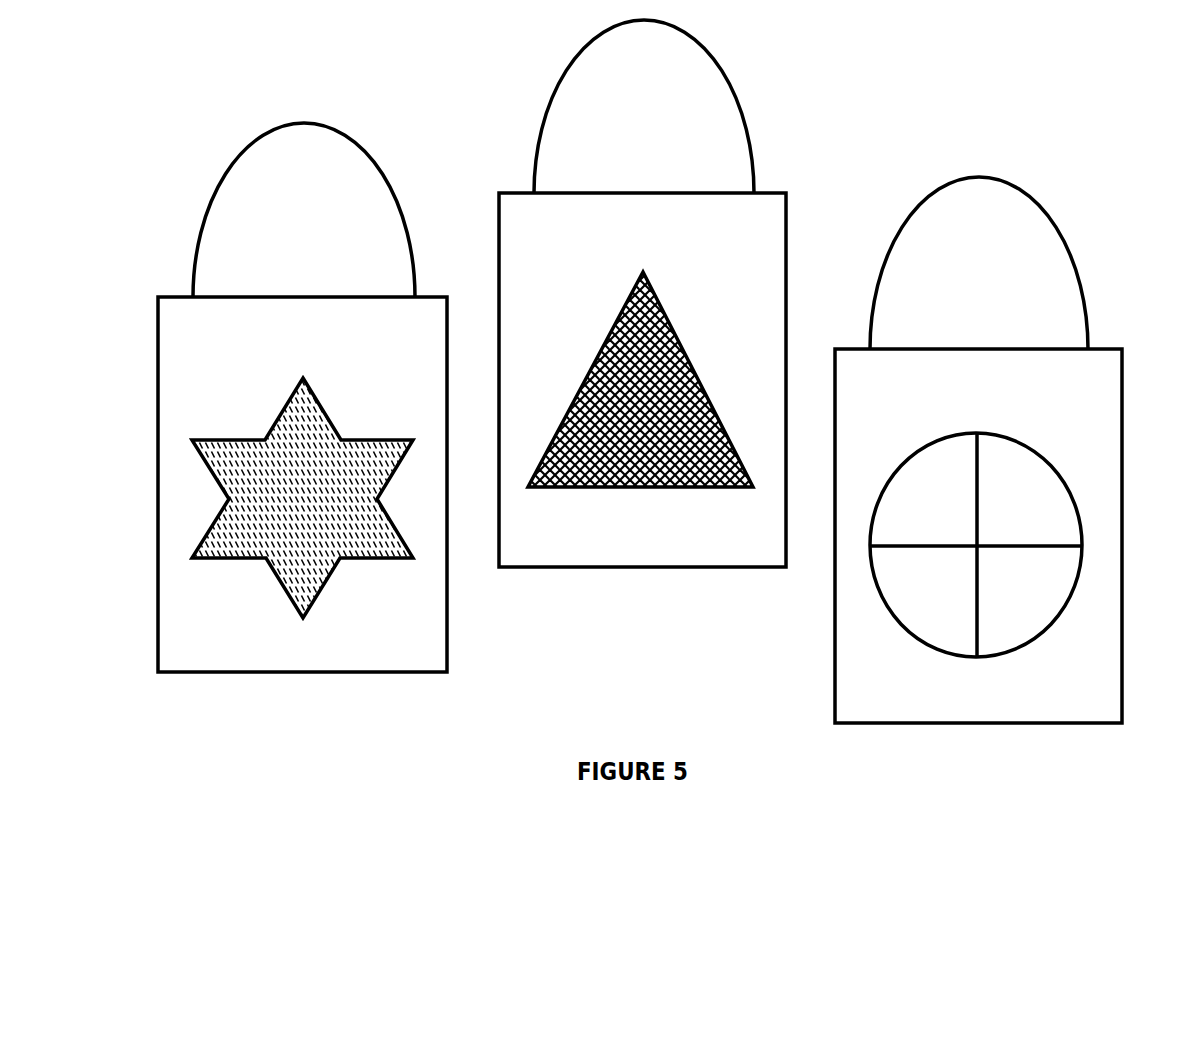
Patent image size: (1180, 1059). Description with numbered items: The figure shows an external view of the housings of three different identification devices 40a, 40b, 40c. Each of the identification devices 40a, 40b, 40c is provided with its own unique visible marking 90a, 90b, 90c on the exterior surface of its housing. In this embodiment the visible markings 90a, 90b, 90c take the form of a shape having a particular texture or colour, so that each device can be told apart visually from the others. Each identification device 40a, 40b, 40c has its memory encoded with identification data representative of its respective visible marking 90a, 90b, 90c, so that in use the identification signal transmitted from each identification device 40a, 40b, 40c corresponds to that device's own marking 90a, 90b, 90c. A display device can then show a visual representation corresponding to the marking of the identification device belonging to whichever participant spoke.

The identification device 40a is at (267, 684).
The identification device 40b is at (608, 580).
The identification device 40c is at (943, 734).
The visible marking 90a is at (344, 568).
The visible marking 90b is at (652, 493).
The visible marking 90c is at (914, 643).